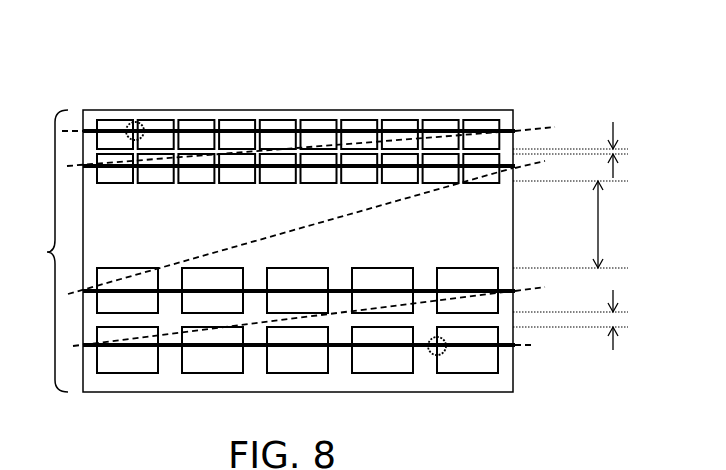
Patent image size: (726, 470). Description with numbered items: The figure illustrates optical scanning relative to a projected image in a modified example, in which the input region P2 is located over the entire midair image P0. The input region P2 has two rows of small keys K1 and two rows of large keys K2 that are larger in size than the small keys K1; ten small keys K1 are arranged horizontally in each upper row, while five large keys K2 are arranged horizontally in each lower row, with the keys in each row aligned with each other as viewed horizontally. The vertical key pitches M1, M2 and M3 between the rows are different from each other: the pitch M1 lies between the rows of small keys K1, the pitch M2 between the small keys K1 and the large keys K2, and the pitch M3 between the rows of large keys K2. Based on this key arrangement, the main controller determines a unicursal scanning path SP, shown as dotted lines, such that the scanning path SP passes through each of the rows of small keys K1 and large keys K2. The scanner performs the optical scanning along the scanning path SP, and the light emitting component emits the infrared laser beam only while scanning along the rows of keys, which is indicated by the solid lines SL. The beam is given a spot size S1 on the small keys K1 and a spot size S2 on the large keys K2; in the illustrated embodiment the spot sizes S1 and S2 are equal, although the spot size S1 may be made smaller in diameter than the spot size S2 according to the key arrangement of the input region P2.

The spot size S1 is at (133, 122).
The spot size S2 is at (440, 356).
The small keys K1 is at (481, 120).
The large keys K2 is at (372, 373).
The solid lines SL is at (504, 377).
The scanning path SP is at (213, 248).
The midair image P0 is at (513, 232).
The input region P2 is at (40, 251).
The vertical key pitch M1 is at (581, 148).
The vertical key pitch M2 is at (574, 224).
The vertical key pitch M3 is at (581, 317).